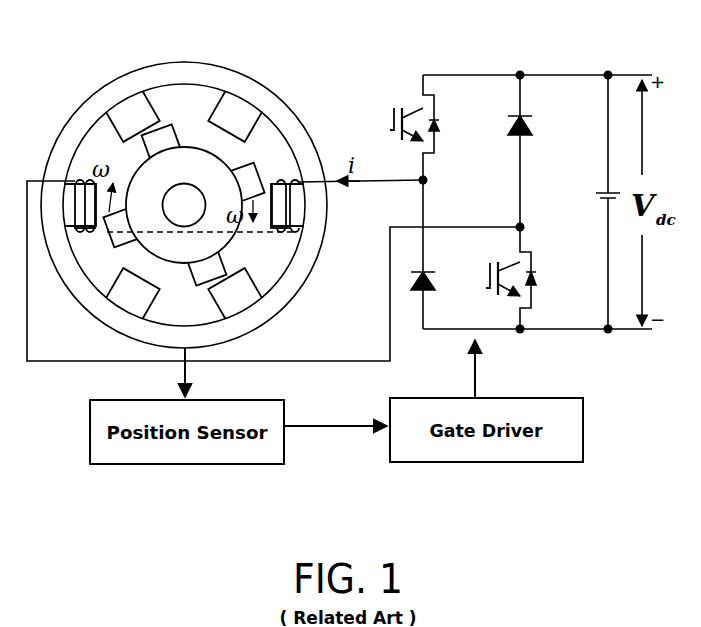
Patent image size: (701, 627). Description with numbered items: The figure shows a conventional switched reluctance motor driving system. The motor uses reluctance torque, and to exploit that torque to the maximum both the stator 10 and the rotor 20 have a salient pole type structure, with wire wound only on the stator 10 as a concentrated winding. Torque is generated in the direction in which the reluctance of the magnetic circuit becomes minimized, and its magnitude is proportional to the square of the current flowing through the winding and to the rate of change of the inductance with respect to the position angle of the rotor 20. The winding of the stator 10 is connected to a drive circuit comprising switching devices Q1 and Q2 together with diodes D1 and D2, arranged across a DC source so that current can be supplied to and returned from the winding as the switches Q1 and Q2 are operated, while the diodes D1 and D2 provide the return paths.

The stator 10 is at (232, 120).
The rotor 20 is at (162, 165).
The upper switching transistor (IGBT) Q1 is at (400, 127).
The lower switching transistor (IGBT) Q2 is at (527, 278).
The upper freewheeling diode D1 is at (539, 151).
The lower freewheeling diode D2 is at (440, 254).